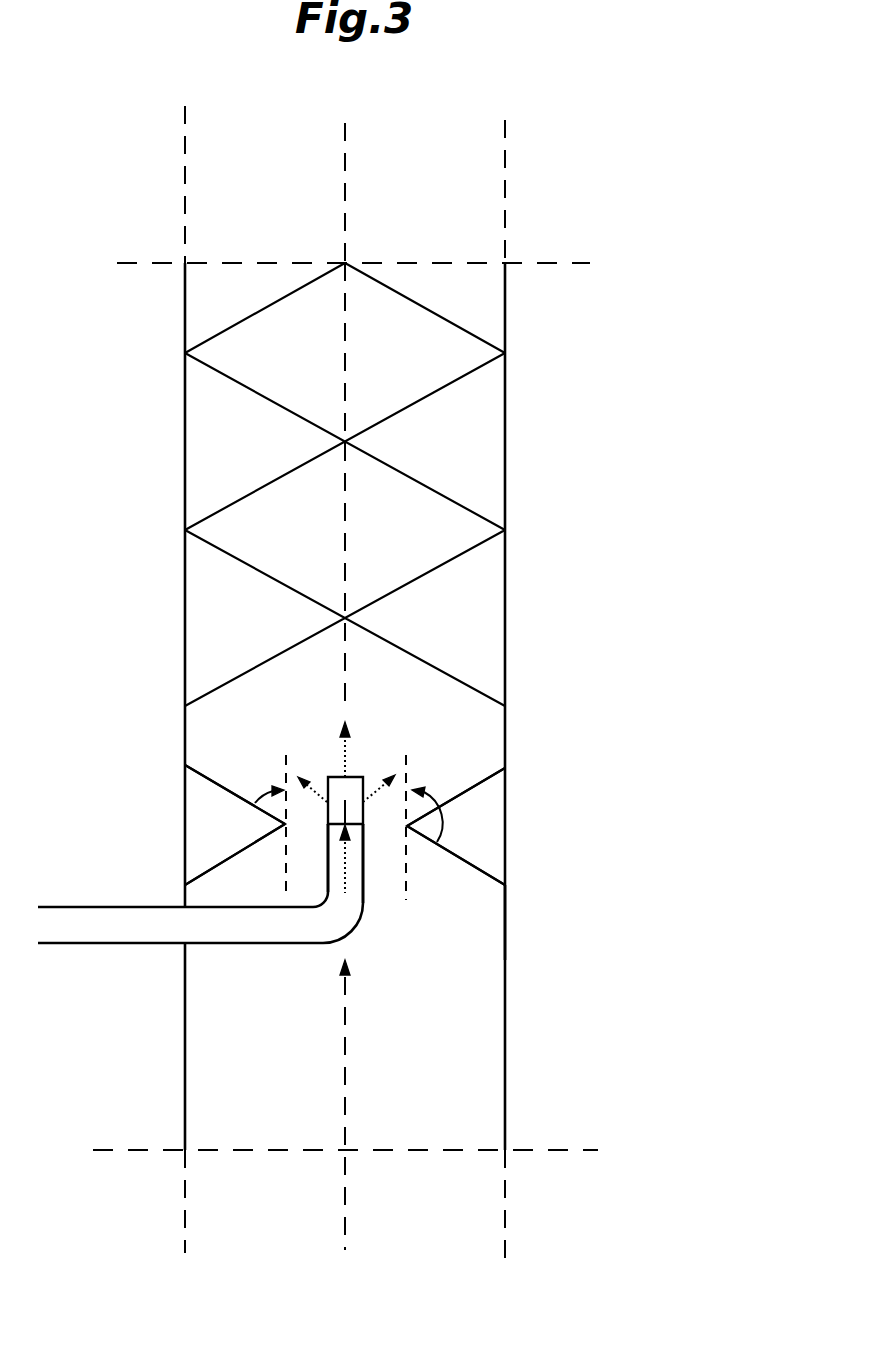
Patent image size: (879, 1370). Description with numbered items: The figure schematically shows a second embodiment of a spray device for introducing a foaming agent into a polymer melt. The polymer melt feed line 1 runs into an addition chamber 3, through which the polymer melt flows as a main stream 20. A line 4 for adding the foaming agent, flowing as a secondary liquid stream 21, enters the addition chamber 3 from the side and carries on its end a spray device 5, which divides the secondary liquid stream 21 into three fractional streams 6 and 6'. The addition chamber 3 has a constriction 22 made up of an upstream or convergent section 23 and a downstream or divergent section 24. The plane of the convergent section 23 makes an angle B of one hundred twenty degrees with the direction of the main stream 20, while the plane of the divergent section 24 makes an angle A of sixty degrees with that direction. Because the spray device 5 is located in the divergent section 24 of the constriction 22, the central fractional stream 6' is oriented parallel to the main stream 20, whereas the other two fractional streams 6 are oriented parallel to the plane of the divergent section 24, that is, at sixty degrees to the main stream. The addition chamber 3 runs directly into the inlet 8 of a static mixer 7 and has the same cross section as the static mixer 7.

The polymer melt feed line 1 is at (505, 1095).
The addition chamber 3 is at (505, 905).
The line for adding a foaming agent 4 is at (86, 945).
The spray device 5 is at (345, 805).
The fractional streams 6 is at (363, 808).
The fractional stream 6' is at (398, 732).
The static mixer 7 is at (505, 433).
The inlet of the static mixer 8 is at (347, 712).
The main stream 20 is at (345, 998).
The secondary liquid stream 21 is at (347, 863).
The constriction 22 is at (208, 822).
The upstream or convergent section 23 is at (230, 857).
The downstream or divergent section 24 is at (215, 790).
The angle A is at (262, 784).
The angle B is at (437, 814).